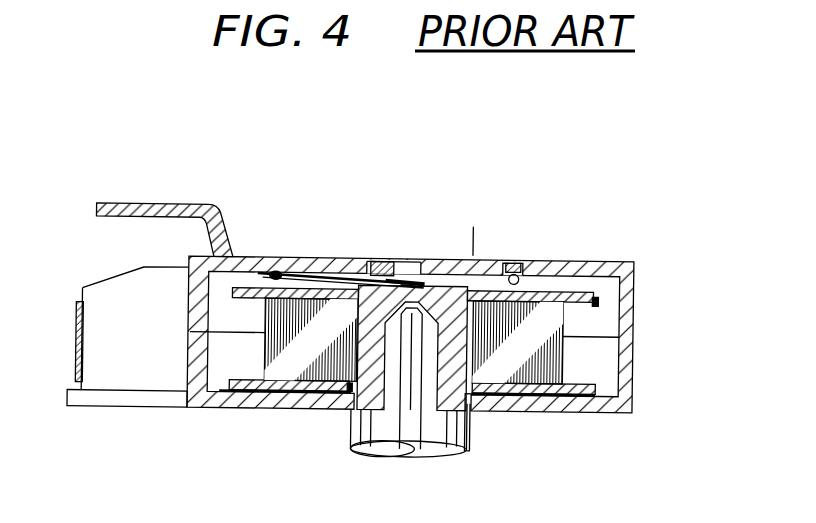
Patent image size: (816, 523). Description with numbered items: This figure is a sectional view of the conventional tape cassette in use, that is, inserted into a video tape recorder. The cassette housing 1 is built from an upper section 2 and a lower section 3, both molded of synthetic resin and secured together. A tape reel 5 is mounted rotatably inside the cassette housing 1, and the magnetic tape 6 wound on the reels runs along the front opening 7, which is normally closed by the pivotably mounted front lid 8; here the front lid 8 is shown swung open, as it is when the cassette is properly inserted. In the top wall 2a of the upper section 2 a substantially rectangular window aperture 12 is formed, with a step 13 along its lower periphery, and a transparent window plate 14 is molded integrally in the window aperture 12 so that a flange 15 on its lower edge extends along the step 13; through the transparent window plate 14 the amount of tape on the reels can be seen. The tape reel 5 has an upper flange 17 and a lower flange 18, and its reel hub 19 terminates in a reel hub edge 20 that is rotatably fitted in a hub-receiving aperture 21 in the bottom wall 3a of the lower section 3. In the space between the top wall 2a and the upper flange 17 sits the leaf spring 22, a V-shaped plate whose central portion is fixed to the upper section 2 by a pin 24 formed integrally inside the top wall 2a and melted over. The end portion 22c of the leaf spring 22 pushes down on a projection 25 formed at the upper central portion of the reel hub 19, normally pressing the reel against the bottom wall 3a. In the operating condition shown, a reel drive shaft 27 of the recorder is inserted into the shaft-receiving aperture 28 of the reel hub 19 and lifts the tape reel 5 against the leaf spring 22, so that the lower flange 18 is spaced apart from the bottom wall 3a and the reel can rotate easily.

The cassette housing 1 is at (283, 177).
The upper section 2 is at (610, 292).
The top wall 2a is at (577, 268).
The lower section 3 is at (607, 364).
The bottom wall 3a is at (588, 406).
The tape reel 5 is at (300, 366).
The magnetic tape 6 is at (80, 354).
The front opening 7 is at (112, 339).
The front lid 8 is at (153, 210).
The window aperture 12 is at (506, 272).
The step 13 is at (518, 261).
The transparent window plate 14 is at (479, 233).
The flange 15 is at (385, 262).
The upper flange 17 is at (597, 300).
The lower flange 18 is at (537, 392).
The reel hub 19 is at (368, 333).
The reel hub edge 20 is at (446, 413).
The hub-receiving aperture 21 is at (470, 414).
The leaf spring 22 is at (340, 273).
The end portion of leaf spring 22c is at (420, 280).
The pin 24 is at (275, 272).
The projection 25 is at (413, 282).
The reel drive shaft 27 is at (421, 408).
The shaft-receiving aperture 28 is at (403, 398).